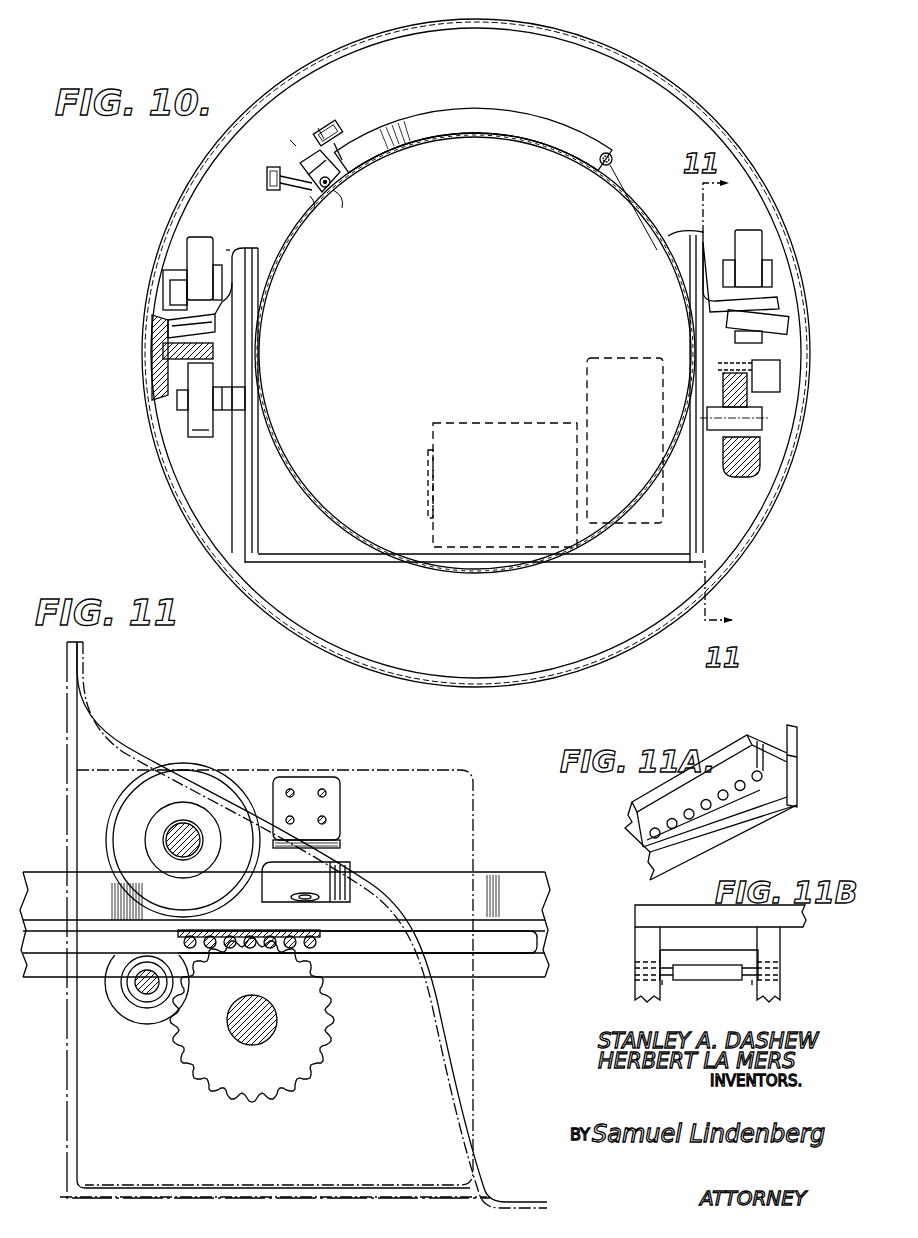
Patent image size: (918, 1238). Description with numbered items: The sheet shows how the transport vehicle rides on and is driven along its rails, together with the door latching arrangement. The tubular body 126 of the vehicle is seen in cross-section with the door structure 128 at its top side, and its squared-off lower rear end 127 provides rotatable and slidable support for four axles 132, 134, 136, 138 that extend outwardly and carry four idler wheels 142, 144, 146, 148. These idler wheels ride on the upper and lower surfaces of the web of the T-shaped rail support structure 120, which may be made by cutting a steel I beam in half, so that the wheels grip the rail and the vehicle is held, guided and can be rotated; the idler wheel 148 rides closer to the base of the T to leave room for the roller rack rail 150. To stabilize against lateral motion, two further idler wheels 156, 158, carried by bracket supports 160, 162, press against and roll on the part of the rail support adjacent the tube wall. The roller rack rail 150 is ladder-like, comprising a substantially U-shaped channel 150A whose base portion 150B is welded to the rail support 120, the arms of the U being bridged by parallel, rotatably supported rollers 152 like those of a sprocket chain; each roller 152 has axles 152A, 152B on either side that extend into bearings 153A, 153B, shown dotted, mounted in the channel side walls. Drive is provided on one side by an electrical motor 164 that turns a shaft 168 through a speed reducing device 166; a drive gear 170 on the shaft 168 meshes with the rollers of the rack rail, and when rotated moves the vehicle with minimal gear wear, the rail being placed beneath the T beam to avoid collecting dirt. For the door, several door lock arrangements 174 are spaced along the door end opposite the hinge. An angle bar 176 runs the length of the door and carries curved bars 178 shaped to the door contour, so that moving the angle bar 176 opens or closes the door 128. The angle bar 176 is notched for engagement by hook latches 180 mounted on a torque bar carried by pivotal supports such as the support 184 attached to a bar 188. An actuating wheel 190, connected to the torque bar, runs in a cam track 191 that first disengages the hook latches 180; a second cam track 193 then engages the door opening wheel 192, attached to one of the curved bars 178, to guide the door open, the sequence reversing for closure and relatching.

In FIG. 10, the rail support structure 120 is at (158, 360).
In FIG. 11, the rail support structure 120 is at (432, 920).
In FIG. 11A, the rail support structure 120 is at (793, 762).
In FIG. 11B, the rail support structure 120 is at (720, 916).
In FIG. 10, the tubular body 126 is at (506, 576).
In FIG. 10, the rear end 127 is at (350, 556).
In FIG. 11, the rear end 127 is at (318, 1187).
In FIG. 10, the door structure 128 is at (458, 140).
In FIG. 11, the door structure 128 is at (312, 925).
In FIG. 10, the axle 132 is at (238, 412).
In FIG. 10, the axle 134 is at (228, 249).
In FIG. 10, the axle 136 is at (722, 264).
In FIG. 11, the axle 136 is at (186, 836).
In FIG. 10, the axle 138 is at (715, 388).
In FIG. 11, the axle 138 is at (150, 994).
In FIG. 10, the idler wheel 142 is at (199, 438).
In FIG. 10, the idler wheel 144 is at (197, 246).
In FIG. 10, the idler wheel 146 is at (752, 236).
In FIG. 11, the idler wheel 146 is at (228, 796).
In FIG. 10, the idler wheel 148 is at (765, 418).
In FIG. 11, the idler wheel 148 is at (118, 1010).
In FIG. 10, the roller rack rail 150 is at (758, 366).
In FIG. 11, the roller rack rail 150 is at (507, 956).
In FIG. 11A, the roller rack rail 150 is at (746, 796).
In FIG. 11, the U-shaped channel 150A is at (400, 944).
In FIG. 11A, the U-shaped channel 150A is at (633, 811).
In FIG. 11B, the U-shaped channel 150A is at (636, 946).
In FIG. 11, the base portion 150B is at (300, 929).
In FIG. 11A, the base portion 150B is at (755, 752).
In FIG. 11B, the base portion 150B is at (768, 964).
In FIG. 11, the rollers 152 is at (312, 950).
In FIG. 11A, the rollers 152 is at (650, 838).
In FIG. 11B, the rollers 152 is at (693, 982).
In FIG. 11B, the axle 152A is at (664, 986).
In FIG. 11B, the axle 152B is at (747, 986).
In FIG. 11B, the bearing 153A is at (633, 962).
In FIG. 11B, the bearing 153B is at (780, 962).
In FIG. 10, the idler wheel 156 is at (168, 334).
In FIG. 10, the idler wheel 158 is at (776, 318).
In FIG. 11, the idler wheel 158 is at (328, 878).
In FIG. 10, the bracket support 160 is at (240, 250).
In FIG. 10, the bracket support 162 is at (770, 300).
In FIG. 11, the bracket support 162 is at (333, 809).
In FIG. 10, the electrical motor 164 is at (480, 424).
In FIG. 10, the speed reducing device 166 is at (641, 358).
In FIG. 11, the shaft 168 is at (250, 1042).
In FIG. 10, the drive gear 170 is at (770, 465).
In FIG. 11, the drive gear 170 is at (290, 1076).
In FIG. 10, the door lock arrangement 174 is at (297, 147).
In FIG. 10, the angle bar 176 is at (333, 157).
In FIG. 10, the curved bar 178 is at (487, 112).
In FIG. 10, the hook latch 180 is at (306, 166).
In FIG. 10, the pivotal support 184 is at (323, 198).
In FIG. 10, the bar 188 is at (336, 194).
In FIG. 10, the actuating wheel 190 is at (300, 185).
In FIG. 10, the cam track 191 is at (267, 177).
In FIG. 10, the door opening wheel 192 is at (345, 128).
In FIG. 10, the cam track 193 is at (321, 126).